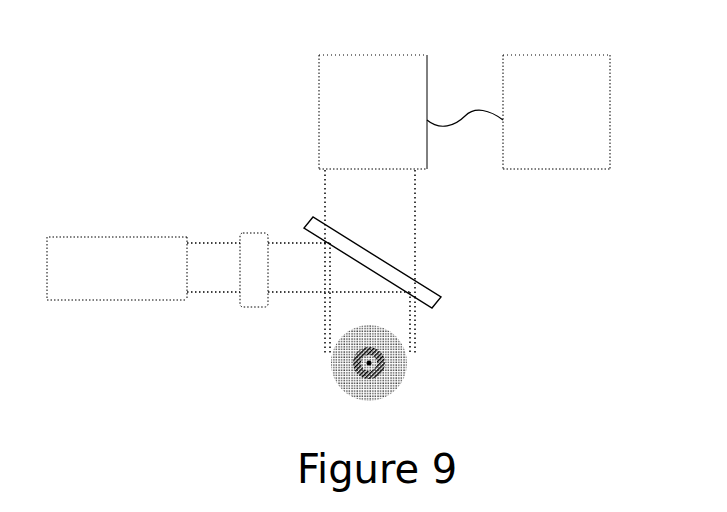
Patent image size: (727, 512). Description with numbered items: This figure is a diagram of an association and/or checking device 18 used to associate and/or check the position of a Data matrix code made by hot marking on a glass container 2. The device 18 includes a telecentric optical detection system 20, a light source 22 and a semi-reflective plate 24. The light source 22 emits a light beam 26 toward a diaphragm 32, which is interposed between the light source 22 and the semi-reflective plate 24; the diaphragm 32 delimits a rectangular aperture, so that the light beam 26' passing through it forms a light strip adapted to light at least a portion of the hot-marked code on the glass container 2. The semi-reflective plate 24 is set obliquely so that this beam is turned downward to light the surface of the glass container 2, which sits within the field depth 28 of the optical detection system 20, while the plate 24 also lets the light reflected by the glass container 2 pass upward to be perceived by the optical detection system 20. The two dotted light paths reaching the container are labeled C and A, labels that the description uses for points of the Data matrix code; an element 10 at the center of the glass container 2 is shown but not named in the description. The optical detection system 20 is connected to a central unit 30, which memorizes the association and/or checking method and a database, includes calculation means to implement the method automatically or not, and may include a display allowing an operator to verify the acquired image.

The association and/or checking device 18 is at (198, 92).
The telecentric optical detection system 20 is at (361, 120).
The central unit 30 is at (544, 120).
The light source 22 is at (101, 279).
The diaphragm 32 is at (264, 276).
The light beam 26 is at (174, 235).
The light beam passing through the aperture 26' is at (262, 211).
The field depth 28 is at (318, 182).
The semi-reflective plate 24 is at (422, 293).
The glass container 2 is at (342, 393).
The target point 10 is at (371, 363).
The point C is at (363, 325).
The point A is at (382, 322).